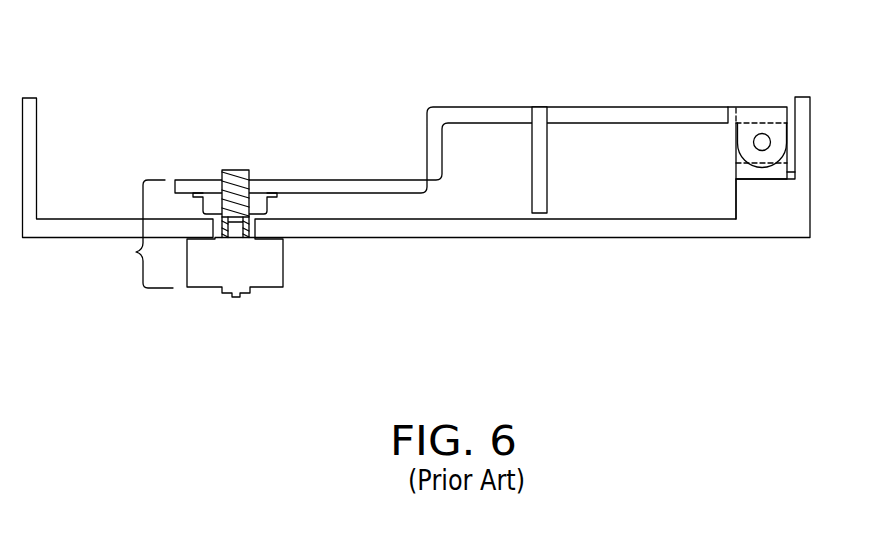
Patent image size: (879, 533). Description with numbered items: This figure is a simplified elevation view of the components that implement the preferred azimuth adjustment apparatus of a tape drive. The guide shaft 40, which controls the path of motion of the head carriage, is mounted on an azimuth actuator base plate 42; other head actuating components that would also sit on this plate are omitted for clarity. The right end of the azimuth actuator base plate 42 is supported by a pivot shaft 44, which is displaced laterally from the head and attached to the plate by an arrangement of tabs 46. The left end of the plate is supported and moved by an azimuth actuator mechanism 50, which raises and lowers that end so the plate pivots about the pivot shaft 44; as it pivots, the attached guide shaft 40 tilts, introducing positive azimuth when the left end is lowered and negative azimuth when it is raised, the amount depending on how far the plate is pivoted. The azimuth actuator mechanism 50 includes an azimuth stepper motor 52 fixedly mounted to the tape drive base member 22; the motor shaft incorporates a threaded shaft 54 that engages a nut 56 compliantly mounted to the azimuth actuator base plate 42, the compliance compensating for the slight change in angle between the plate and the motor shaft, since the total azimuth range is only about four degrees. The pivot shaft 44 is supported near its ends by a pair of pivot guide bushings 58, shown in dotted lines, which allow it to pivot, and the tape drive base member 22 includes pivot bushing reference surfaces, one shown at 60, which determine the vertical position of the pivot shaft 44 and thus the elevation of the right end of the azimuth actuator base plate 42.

The tape drive base member 22 is at (423, 227).
The guide shaft 40 is at (538, 113).
The azimuth actuator base plate 42 is at (347, 177).
The pivot shaft 44 is at (763, 136).
The tabs 46 is at (750, 108).
The azimuth actuator mechanism 50 is at (135, 252).
The azimuth stepper motor 52 is at (254, 267).
The threaded shaft 54 is at (228, 172).
The nut 56 is at (208, 180).
The pivot guide bushings 58 is at (787, 170).
The pivot bushing reference surface 60 is at (758, 180).